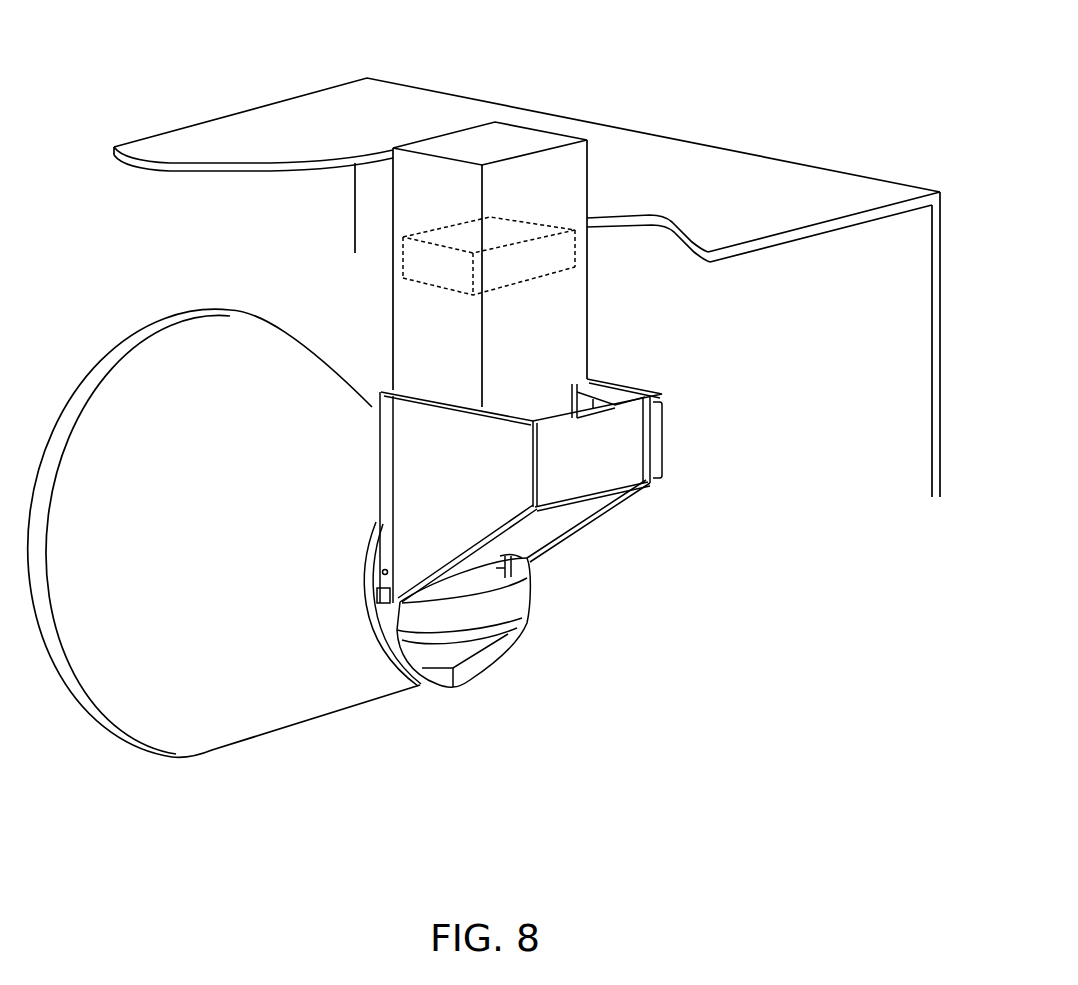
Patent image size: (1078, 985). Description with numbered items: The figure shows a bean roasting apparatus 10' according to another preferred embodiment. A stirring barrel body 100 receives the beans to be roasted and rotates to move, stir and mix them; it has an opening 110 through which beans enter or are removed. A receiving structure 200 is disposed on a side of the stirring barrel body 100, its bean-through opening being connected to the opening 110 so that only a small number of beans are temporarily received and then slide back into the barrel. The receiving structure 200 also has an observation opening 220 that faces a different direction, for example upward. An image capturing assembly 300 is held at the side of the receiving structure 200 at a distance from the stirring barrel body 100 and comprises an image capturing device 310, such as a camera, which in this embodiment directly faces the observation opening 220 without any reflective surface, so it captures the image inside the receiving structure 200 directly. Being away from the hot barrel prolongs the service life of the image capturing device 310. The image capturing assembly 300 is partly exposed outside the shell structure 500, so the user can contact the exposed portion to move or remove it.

The bean roasting apparatus 10' is at (815, 45).
The shell structure 500 is at (313, 122).
The image capturing assembly 300 is at (393, 318).
The image capturing device 310 is at (563, 255).
The receiving structure 200 is at (517, 607).
The observation opening 220 is at (497, 567).
The stirring barrel body 100 is at (178, 742).
The opening 110 is at (417, 683).